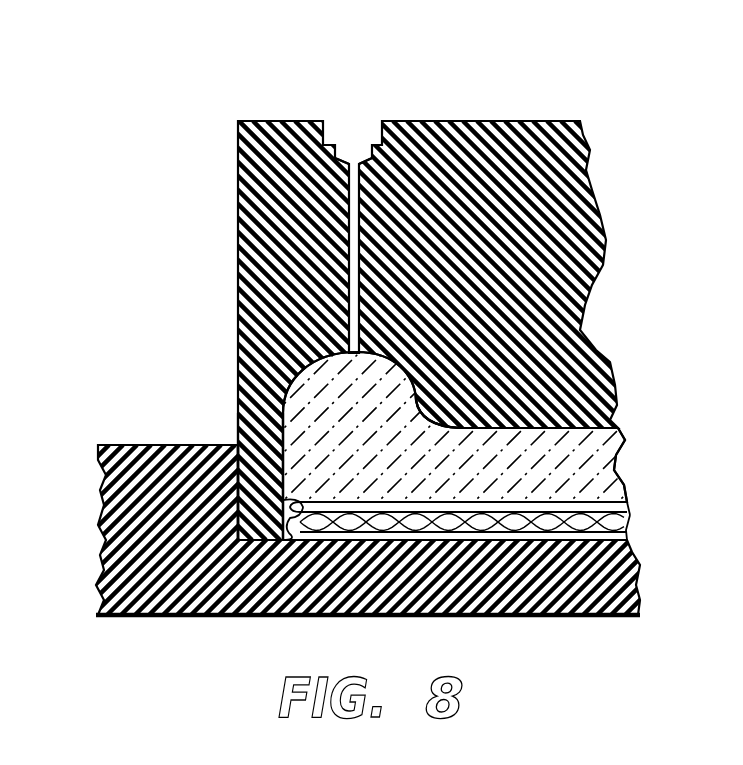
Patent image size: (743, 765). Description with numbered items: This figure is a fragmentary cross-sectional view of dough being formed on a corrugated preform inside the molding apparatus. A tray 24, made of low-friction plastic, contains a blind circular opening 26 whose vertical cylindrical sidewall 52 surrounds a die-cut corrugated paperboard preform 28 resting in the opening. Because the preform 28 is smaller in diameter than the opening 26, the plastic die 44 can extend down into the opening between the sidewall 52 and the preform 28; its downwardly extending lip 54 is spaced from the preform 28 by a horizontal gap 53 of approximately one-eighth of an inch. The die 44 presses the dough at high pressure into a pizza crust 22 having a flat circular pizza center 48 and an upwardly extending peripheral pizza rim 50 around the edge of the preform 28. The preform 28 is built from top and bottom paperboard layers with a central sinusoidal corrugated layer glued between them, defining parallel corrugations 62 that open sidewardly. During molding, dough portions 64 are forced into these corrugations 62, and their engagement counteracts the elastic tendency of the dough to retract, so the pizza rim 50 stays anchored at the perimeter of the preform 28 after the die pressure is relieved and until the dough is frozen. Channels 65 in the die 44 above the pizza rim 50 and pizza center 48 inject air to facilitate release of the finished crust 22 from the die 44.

The plastic die 44 is at (415, 120).
The channels 65 is at (297, 121).
The pizza rim 50 is at (403, 357).
The pizza center 48 is at (572, 422).
The sidewall 52 is at (260, 433).
The dough portions 64 is at (238, 473).
The pizza crust 22 is at (621, 442).
The corrugated paperboard preform 28 is at (625, 506).
The circular opening 26 is at (628, 524).
The corrugations 62 is at (492, 522).
The horizontal gap 53 is at (292, 522).
The tray 24 is at (590, 613).
The lip 54 is at (150, 614).